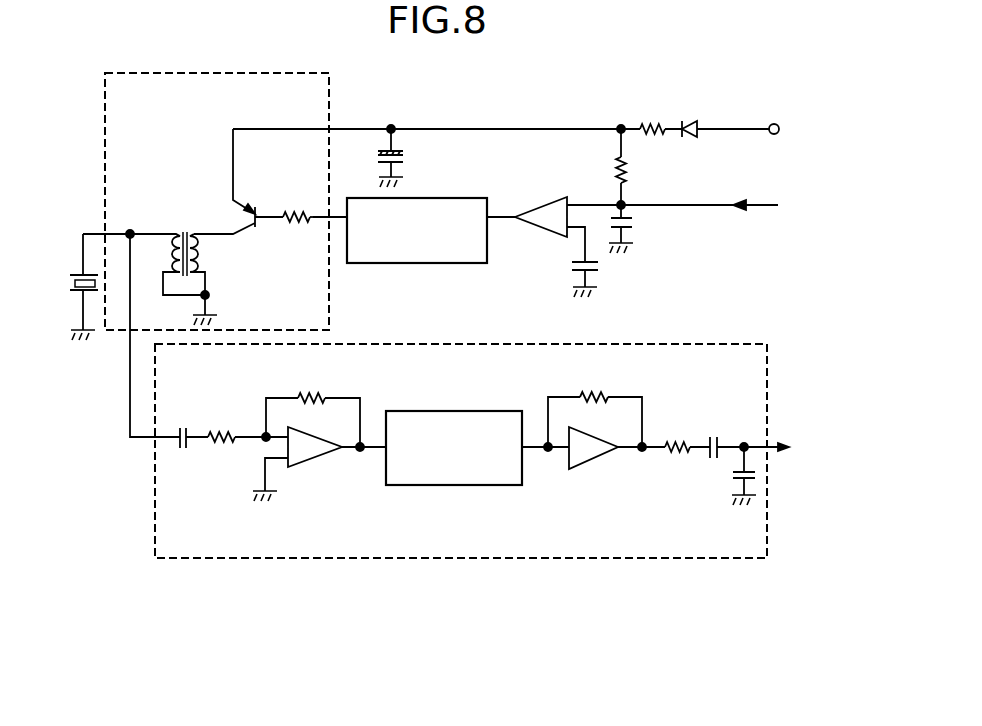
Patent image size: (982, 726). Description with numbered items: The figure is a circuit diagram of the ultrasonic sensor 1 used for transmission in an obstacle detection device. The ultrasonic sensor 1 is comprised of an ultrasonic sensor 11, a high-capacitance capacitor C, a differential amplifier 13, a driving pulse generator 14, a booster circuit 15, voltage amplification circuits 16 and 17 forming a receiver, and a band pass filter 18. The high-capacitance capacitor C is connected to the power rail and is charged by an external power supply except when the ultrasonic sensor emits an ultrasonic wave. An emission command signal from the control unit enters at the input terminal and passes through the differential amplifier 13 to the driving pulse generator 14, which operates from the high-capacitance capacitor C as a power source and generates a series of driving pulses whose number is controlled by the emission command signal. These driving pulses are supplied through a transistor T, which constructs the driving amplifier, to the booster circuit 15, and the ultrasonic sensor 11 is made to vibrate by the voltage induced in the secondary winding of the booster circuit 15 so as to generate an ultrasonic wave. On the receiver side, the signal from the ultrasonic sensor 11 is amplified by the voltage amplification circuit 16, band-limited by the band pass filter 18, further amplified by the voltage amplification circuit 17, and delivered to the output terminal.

The ultrasonic sensor 1 is at (500, 611).
The ultrasonic sensor 11 is at (80, 271).
The differential amplifier 13 is at (547, 202).
The driving pulse generator 14 is at (417, 264).
The booster circuit 15 is at (188, 228).
The voltage amplification circuit 16 is at (312, 464).
The voltage amplification circuit 17 is at (593, 463).
The band pass filter 18 is at (455, 486).
The transistor T is at (253, 181).
The high-capacitance capacitor C is at (410, 157).